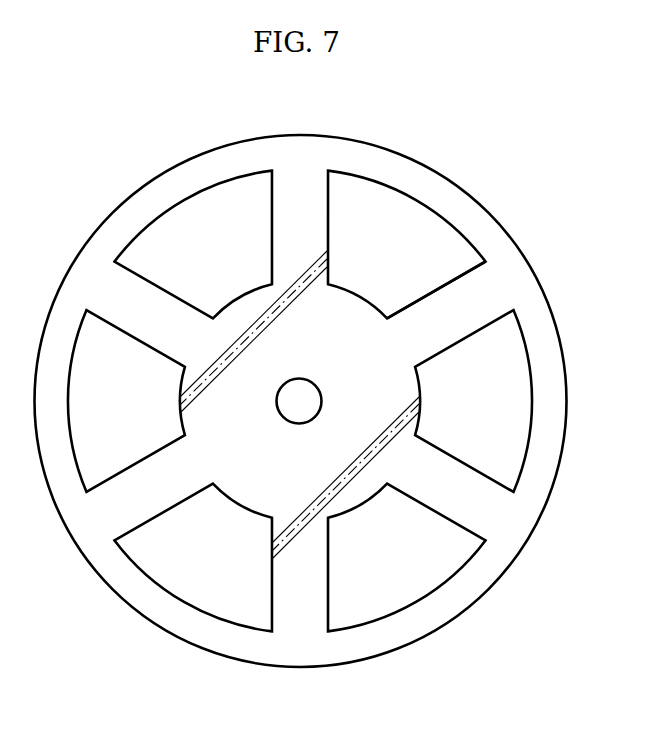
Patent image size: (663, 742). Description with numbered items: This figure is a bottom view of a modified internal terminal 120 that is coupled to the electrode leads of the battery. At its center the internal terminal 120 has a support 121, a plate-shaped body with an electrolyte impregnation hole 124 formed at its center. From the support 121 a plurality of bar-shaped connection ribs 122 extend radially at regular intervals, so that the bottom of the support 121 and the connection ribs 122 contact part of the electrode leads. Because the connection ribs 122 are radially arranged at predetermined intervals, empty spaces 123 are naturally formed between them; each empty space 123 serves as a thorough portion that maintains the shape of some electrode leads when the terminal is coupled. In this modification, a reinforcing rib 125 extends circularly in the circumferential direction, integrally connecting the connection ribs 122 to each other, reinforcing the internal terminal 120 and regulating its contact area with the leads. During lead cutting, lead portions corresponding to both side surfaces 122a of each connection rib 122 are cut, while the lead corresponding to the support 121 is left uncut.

The internal terminal 120 is at (159, 127).
The support 121 is at (405, 388).
The connection rib 122 is at (423, 320).
The side surface of the connection rib 122a is at (445, 283).
The empty space 123 is at (383, 235).
The electrolyte impregnation hole 124 is at (276, 407).
The reinforcing rib 125 is at (477, 225).